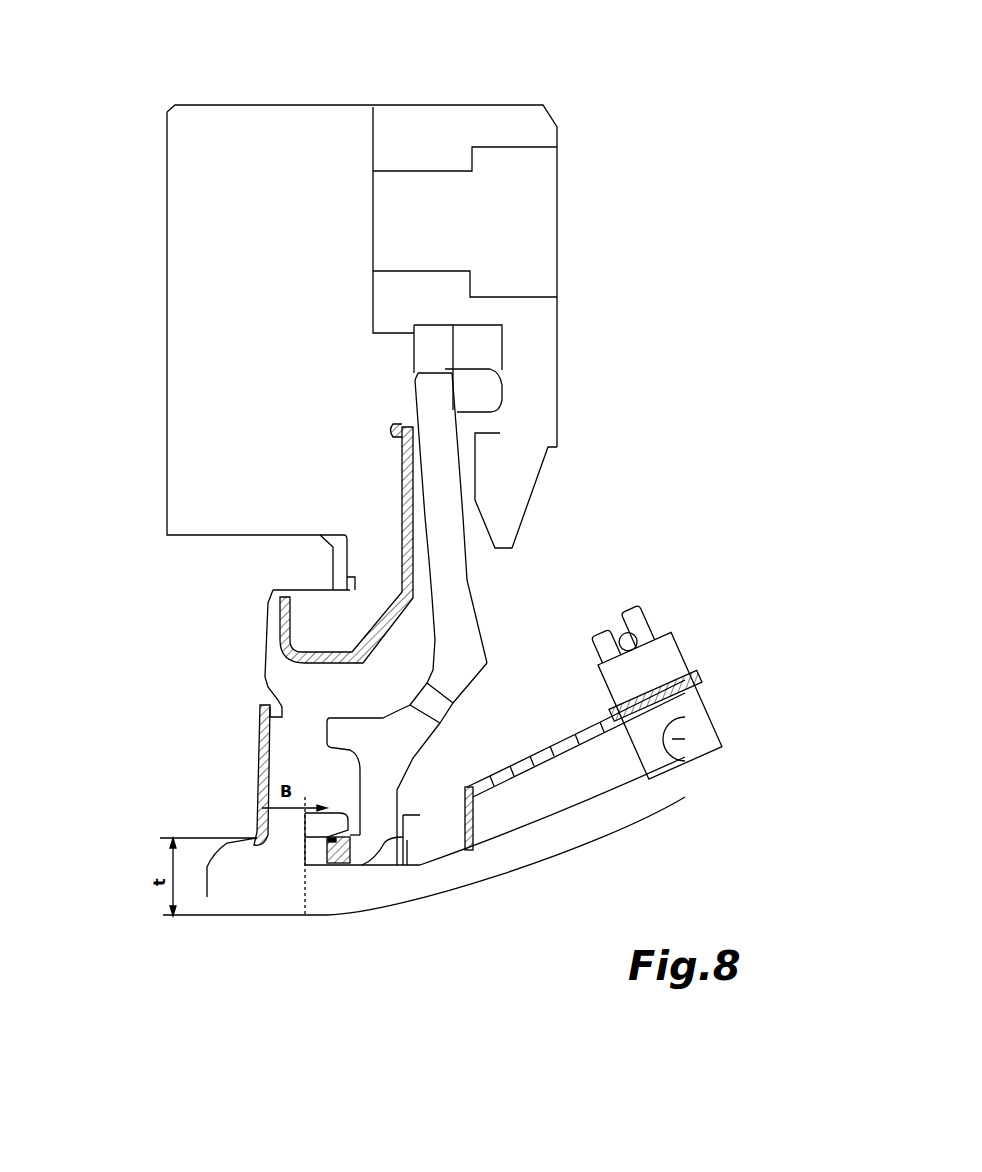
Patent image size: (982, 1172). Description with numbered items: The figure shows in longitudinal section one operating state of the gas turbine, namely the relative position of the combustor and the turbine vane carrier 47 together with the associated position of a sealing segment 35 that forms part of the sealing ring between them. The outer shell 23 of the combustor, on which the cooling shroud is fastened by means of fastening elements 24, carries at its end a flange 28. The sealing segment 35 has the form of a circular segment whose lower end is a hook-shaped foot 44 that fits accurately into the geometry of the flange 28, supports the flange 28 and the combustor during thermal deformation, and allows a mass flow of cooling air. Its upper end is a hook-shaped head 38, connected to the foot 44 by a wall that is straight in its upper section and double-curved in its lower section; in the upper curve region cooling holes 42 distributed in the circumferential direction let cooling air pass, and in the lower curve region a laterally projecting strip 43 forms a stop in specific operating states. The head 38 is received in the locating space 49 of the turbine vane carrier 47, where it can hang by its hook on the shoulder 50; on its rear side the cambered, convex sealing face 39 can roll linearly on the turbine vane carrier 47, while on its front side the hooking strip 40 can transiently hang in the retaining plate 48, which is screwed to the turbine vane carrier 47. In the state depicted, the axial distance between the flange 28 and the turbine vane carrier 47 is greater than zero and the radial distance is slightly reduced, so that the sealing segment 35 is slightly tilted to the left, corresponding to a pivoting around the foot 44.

The outer shell 23 is at (645, 808).
The fastening elements 24 is at (660, 650).
The flange 28 is at (370, 918).
The sealing segment 35 is at (452, 598).
The head 38 is at (427, 385).
The sealing face 39 is at (413, 384).
The hooking strip 40 is at (498, 380).
The cooling holes 42 is at (433, 703).
The strip 43 is at (323, 732).
The foot 44 is at (343, 853).
The turbine vane carrier 47 is at (287, 389).
The retaining plate 48 is at (535, 132).
The locating space 49 is at (467, 342).
The shoulder 50 is at (500, 433).